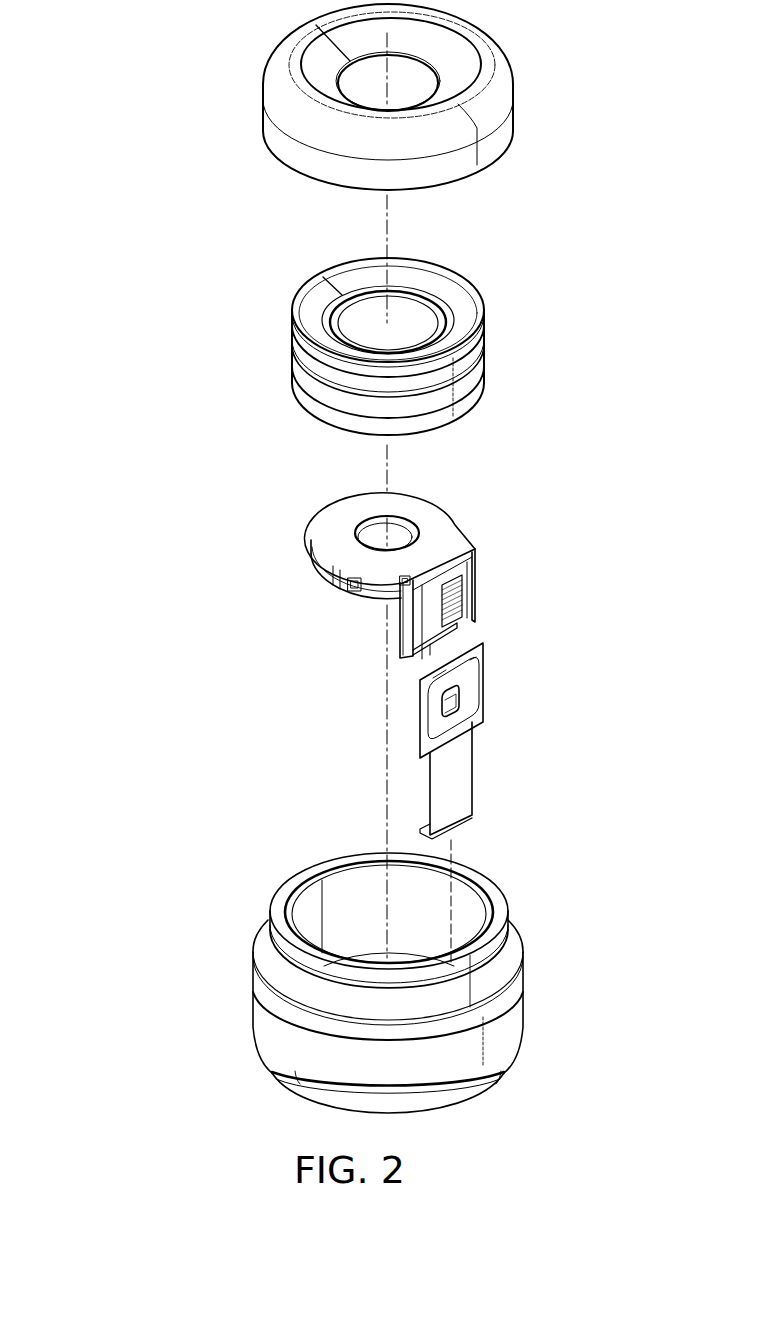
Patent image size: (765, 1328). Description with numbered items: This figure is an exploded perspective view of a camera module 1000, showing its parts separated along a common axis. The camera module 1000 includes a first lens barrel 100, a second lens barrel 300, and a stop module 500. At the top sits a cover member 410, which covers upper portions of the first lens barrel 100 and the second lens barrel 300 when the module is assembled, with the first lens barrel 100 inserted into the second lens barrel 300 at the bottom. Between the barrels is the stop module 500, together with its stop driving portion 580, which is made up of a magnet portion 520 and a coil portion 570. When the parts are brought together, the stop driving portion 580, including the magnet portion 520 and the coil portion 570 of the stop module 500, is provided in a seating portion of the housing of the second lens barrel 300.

The camera module 1000 is at (103, 27).
The cover member 410 is at (495, 80).
The first lens barrel 100 is at (512, 348).
The stop module 500 is at (515, 536).
The magnet portion 520 is at (473, 596).
The coil portion 570 is at (482, 703).
The stop driving portion 580 is at (526, 757).
The second lens barrel 300 is at (545, 974).